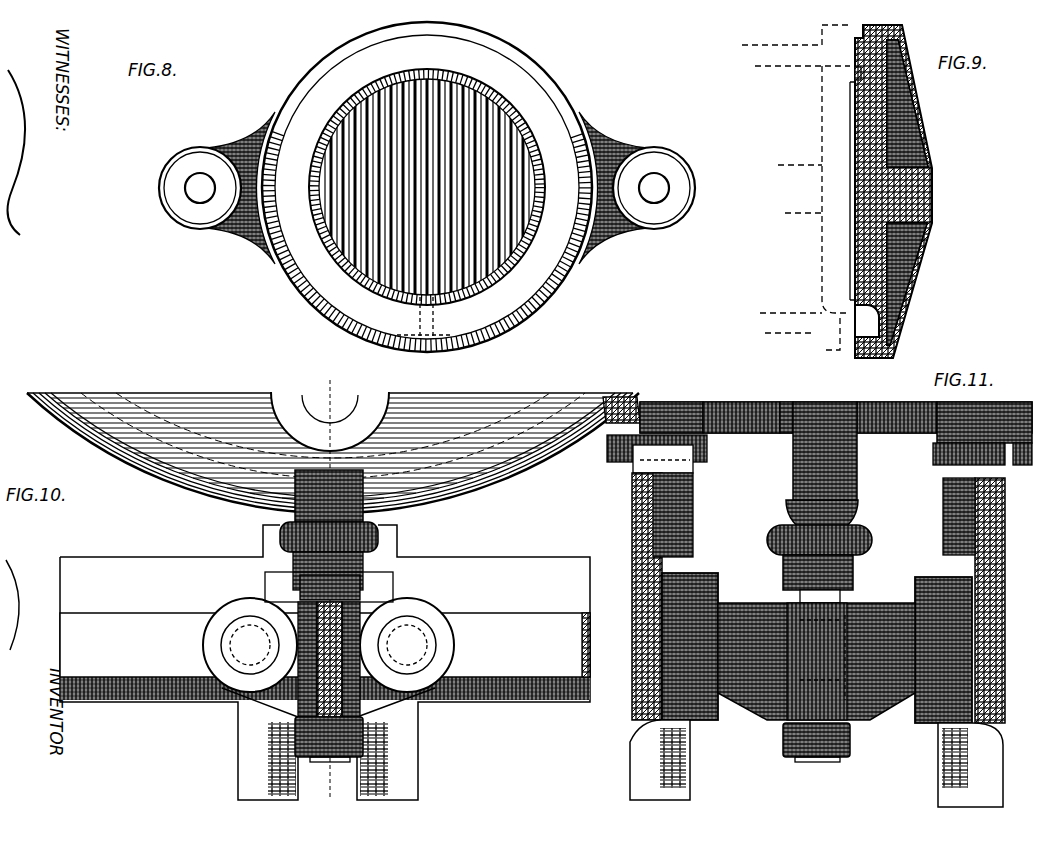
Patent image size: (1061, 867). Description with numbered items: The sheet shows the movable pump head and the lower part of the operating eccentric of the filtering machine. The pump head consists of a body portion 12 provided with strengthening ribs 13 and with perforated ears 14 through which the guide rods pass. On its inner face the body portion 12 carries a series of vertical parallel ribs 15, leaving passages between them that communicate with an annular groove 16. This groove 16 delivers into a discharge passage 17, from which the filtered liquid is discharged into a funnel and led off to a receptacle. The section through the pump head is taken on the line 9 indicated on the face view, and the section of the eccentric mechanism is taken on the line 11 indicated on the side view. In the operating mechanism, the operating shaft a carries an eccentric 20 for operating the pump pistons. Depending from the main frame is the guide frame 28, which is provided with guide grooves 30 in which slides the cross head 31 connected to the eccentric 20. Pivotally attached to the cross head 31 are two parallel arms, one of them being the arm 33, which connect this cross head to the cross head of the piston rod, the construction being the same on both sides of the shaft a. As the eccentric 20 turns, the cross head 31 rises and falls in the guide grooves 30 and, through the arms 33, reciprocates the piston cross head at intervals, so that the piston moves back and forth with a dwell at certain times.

In FIG. 8, the filter casing rim 9 is at (428, 68).
In FIG. 9, the body portion 12 is at (882, 135).
In FIG. 9, the strengthening ribs 13 is at (915, 261).
In FIG. 8, the perforated ears 14 is at (185, 183).
In FIG. 8, the vertical parallel ribs 15 is at (466, 127).
In FIG. 8, the annular groove 16 is at (549, 243).
In FIG. 9, the annular groove 16 is at (852, 73).
In FIG. 8, the discharge passage 17 is at (397, 359).
In FIG. 9, the discharge passage 17 is at (877, 324).
In FIG. 10, the eccentric 20 is at (200, 462).
In FIG. 11, the eccentric 20 is at (832, 496).
In FIG. 11, the guide frame 28 is at (993, 604).
In FIG. 10, the guide grooves 30 is at (358, 785).
In FIG. 11, the guide grooves 30 is at (953, 772).
In FIG. 10, the cross head 31 is at (297, 600).
In FIG. 11, the cross head 31 is at (876, 603).
In FIG. 10, the parallel arm 33 is at (126, 613).
In FIG. 10, the stem 11 is at (330, 405).
In FIG. 10, the operating shaft a is at (325, 403).
In FIG. 11, the operating shaft a is at (910, 434).